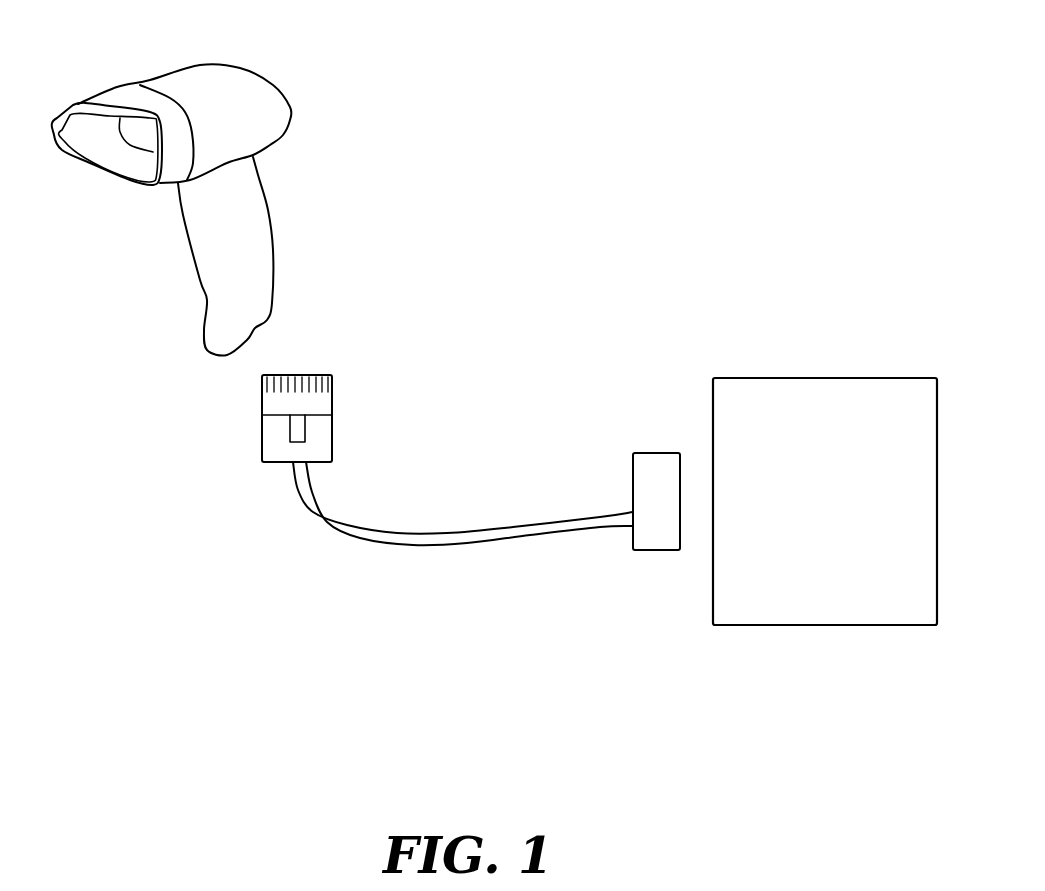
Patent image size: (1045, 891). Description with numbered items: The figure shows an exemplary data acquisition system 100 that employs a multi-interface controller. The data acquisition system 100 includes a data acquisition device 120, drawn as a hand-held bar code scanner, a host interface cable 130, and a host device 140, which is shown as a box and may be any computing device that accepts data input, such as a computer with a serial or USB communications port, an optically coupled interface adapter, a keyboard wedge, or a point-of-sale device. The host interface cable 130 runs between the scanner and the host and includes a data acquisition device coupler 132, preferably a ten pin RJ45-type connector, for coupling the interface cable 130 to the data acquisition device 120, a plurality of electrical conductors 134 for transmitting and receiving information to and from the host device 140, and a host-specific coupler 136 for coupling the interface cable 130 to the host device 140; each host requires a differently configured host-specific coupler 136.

The data acquisition system 100 is at (197, 669).
The data acquisition device 120 is at (252, 138).
The host interface cable 130 is at (403, 522).
The data acquisition device coupler 132 is at (260, 428).
The plurality of electrical conductors 134 is at (347, 533).
The host-specific coupler 136 is at (652, 452).
The host device 140 is at (850, 377).